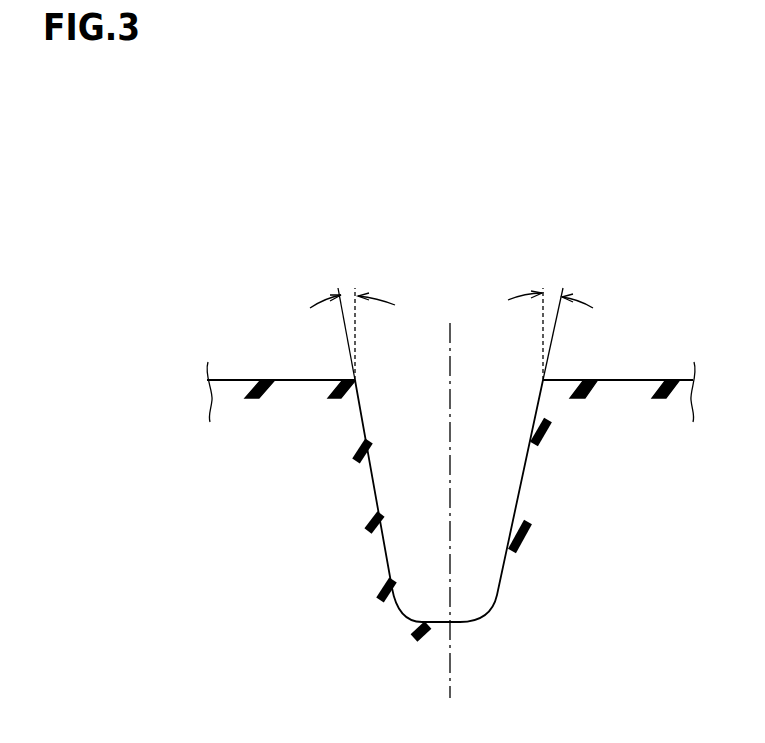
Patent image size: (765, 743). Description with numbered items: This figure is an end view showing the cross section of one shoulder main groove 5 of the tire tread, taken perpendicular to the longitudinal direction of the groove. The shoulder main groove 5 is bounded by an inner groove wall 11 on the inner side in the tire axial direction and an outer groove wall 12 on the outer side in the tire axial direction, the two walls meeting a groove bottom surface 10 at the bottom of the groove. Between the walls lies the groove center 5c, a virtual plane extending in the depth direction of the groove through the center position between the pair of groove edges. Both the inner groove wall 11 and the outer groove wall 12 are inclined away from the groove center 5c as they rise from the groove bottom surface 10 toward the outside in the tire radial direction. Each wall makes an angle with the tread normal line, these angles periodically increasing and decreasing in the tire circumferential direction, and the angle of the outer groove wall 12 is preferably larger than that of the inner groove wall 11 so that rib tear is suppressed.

The shoulder main groove 5 is at (421, 418).
The groove center 5c is at (450, 350).
The groove bottom surface 10 is at (458, 604).
The inner groove wall 11 is at (377, 493).
The outer groove wall 12 is at (527, 467).